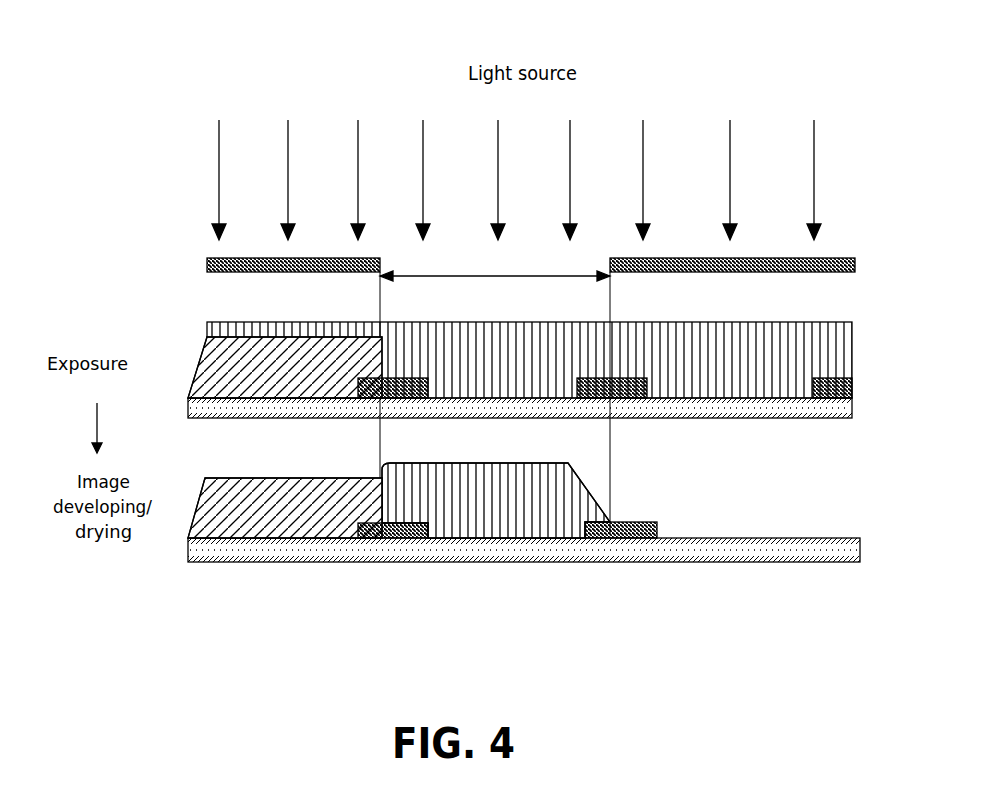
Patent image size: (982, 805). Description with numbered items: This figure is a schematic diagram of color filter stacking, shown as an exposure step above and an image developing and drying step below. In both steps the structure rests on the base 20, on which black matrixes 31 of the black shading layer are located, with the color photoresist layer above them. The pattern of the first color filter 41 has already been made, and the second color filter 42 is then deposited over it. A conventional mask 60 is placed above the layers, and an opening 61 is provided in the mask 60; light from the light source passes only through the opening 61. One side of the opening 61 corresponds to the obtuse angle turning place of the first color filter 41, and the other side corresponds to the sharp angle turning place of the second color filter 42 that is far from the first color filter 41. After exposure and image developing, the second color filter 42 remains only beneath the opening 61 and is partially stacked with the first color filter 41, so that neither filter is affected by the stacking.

The base 20 is at (827, 407).
The black matrix 31 is at (410, 540).
The first color filter 41 is at (330, 345).
The second color filter 42 is at (737, 358).
The conventional mask 60 is at (253, 258).
The opening 61 is at (522, 268).